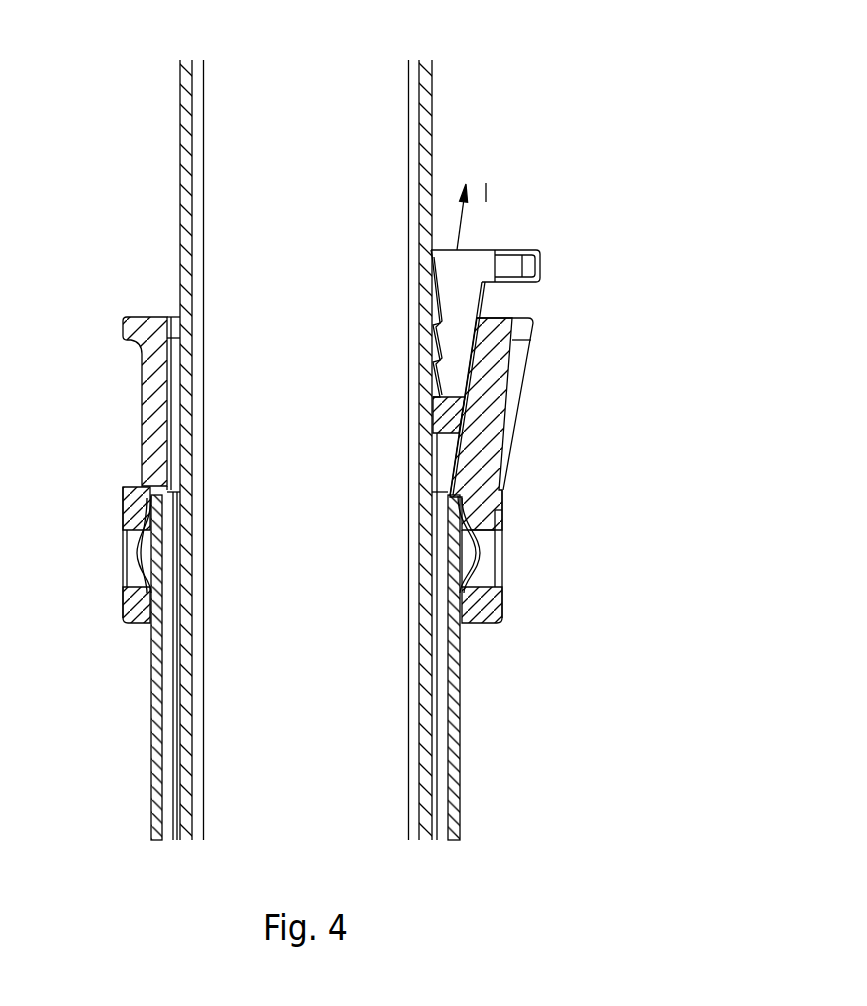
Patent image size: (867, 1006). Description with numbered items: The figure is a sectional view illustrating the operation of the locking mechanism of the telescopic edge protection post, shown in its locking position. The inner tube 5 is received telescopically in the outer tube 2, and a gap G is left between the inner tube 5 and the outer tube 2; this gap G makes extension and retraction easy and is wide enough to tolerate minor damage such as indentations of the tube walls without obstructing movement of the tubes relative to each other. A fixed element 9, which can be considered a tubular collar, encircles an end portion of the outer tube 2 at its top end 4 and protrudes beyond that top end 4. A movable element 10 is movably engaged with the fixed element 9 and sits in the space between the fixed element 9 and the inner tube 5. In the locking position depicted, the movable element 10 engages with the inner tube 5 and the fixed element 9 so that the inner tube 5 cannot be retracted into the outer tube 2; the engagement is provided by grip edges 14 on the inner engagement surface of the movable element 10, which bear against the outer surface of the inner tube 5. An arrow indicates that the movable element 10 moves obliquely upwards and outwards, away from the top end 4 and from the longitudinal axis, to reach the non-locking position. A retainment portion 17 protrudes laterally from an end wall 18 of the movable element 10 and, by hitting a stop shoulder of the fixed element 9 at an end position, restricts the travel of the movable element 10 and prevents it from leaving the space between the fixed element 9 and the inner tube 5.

The outer tube 2 is at (451, 733).
The top end 4 is at (456, 508).
The inner tube 5 is at (424, 184).
The fixed element 9 is at (490, 408).
The movable element 10 is at (472, 268).
The grip edges 14 is at (440, 323).
The retainment portion 17 is at (440, 428).
The end wall 18 is at (455, 313).
The gap G is at (243, 740).